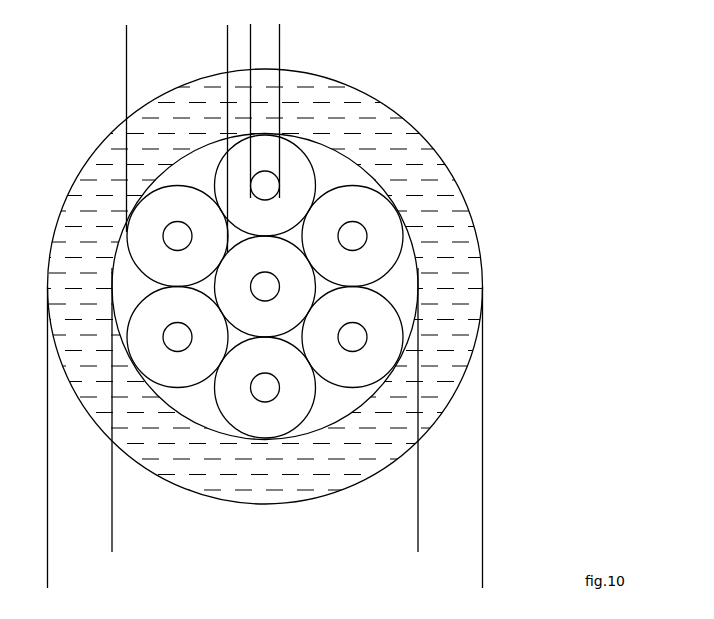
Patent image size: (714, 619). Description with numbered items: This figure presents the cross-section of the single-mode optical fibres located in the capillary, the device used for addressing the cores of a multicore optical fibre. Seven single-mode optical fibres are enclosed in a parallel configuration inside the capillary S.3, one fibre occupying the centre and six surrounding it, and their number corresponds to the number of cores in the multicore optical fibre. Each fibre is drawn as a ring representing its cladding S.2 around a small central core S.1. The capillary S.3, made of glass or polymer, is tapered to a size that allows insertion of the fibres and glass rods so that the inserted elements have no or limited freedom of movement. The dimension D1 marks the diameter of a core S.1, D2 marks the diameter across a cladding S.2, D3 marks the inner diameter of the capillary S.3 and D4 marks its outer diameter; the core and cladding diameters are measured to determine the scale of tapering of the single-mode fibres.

The core of single-mode optical fibre S.1 is at (353, 237).
The cladding of single-mode optical fibre S.2 is at (353, 206).
The capillary S.3 is at (440, 260).
The conductor core diameter D1 is at (250, 29).
The insulated conductor diameter D2 is at (126, 30).
The inner sheath diameter D3 is at (112, 547).
The cable outer diameter D4 is at (48, 583).